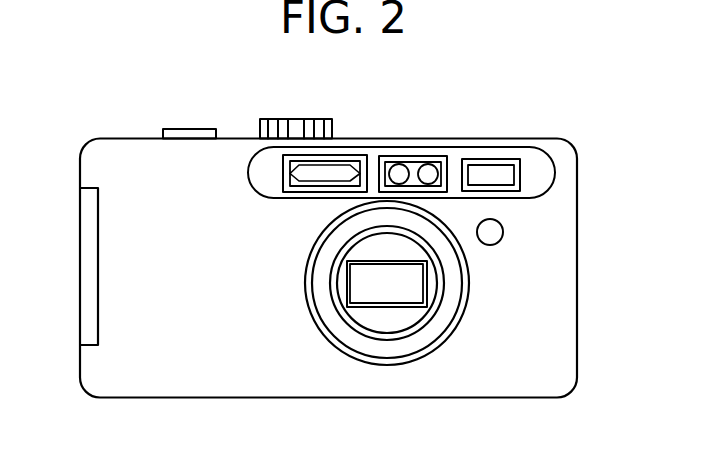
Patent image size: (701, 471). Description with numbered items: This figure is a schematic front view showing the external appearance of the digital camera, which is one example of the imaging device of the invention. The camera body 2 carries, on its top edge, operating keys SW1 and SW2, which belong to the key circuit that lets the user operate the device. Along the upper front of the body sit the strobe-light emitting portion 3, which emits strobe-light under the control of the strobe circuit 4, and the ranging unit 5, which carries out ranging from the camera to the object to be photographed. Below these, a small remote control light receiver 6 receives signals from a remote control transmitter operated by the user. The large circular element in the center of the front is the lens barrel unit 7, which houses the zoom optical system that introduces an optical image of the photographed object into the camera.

The camera body 2 is at (80, 237).
The operating key unit SW1 is at (193, 128).
The operating key unit SW2 is at (296, 119).
The strobe-light emitting portion 3 is at (352, 165).
The ranging unit 5 is at (431, 164).
The strobe circuit 4 is at (508, 168).
The remote control light receiver 6 is at (497, 235).
The lens barrel unit 7 is at (405, 322).